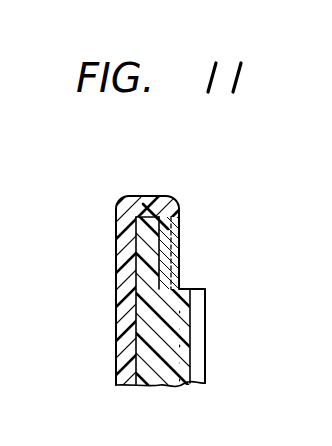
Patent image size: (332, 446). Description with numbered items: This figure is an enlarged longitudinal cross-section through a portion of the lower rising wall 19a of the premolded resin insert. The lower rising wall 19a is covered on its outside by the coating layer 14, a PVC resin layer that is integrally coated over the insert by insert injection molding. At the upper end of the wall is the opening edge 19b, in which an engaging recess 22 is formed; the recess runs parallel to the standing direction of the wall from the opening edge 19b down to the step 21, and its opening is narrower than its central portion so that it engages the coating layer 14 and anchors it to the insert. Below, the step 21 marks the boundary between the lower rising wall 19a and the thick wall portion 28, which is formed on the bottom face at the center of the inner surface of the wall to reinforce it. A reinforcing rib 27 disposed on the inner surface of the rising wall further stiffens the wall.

The coating layer 14 is at (120, 235).
The lower rising wall 19a is at (137, 278).
The opening edge 19b is at (146, 207).
The engaging recess 22 is at (180, 245).
The step 21 is at (182, 287).
The reinforcing rib 27 is at (200, 337).
The thick wall portion 28 is at (180, 372).